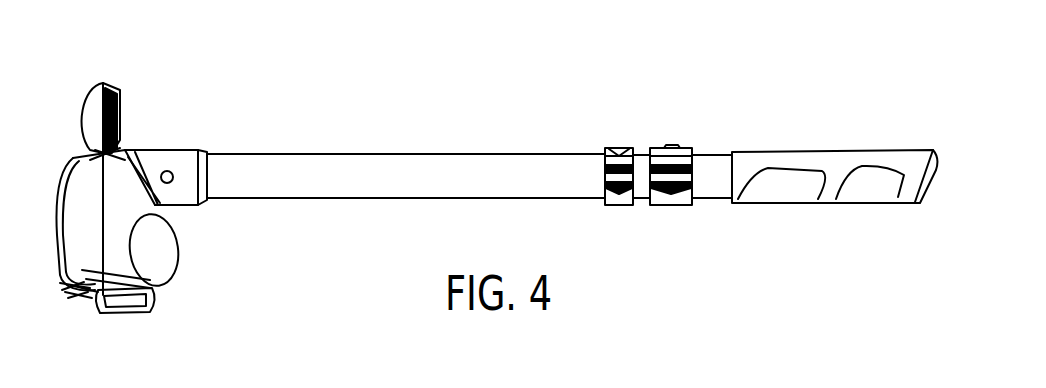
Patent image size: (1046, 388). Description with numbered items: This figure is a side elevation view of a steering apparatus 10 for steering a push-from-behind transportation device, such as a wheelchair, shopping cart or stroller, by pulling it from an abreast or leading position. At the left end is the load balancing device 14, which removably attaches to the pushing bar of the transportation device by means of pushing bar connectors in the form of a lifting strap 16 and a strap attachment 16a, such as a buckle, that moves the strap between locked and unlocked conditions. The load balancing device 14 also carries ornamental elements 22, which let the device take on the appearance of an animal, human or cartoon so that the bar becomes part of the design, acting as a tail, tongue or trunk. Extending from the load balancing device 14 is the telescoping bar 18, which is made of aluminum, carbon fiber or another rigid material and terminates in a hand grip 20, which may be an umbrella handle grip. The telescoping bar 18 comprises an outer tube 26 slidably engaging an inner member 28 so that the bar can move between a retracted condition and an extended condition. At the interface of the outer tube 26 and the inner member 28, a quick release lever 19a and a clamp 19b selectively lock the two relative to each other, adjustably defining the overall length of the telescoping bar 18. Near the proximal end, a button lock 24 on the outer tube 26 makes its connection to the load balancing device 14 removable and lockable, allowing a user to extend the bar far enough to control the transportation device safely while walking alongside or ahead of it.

The steering apparatus 10 is at (829, 66).
The load balancing device 14 is at (92, 258).
The lifting strap 16 is at (171, 268).
The strap attachment 16a is at (147, 307).
The telescoping bar 18 is at (344, 154).
The quick release lever 19a is at (680, 158).
The clamp 19b is at (618, 150).
The hand grip 20 is at (790, 158).
The ornamental elements 22 is at (92, 97).
The button lock 24 is at (172, 172).
The outer tube 26 is at (460, 168).
The inner member 28 is at (717, 187).